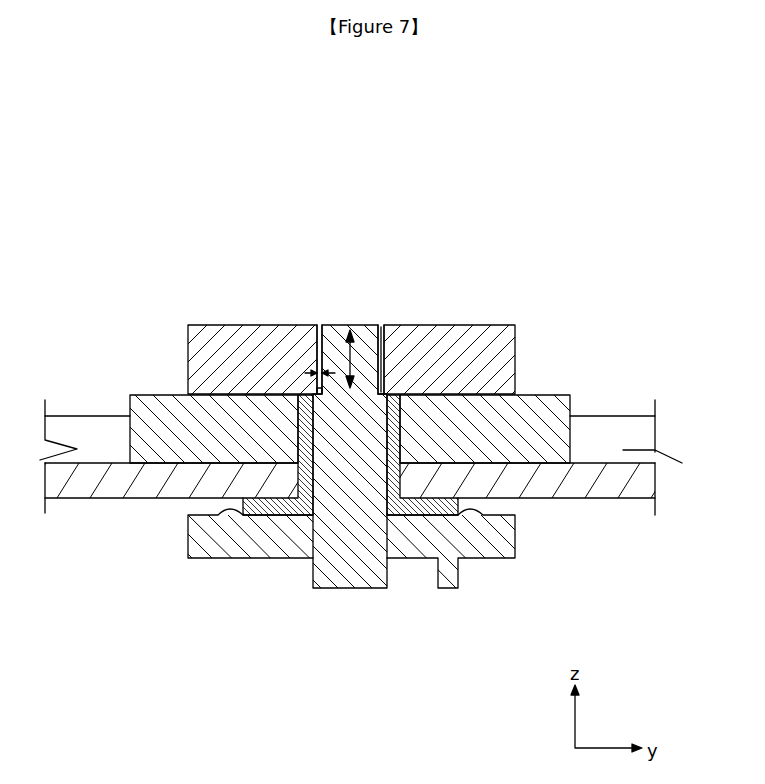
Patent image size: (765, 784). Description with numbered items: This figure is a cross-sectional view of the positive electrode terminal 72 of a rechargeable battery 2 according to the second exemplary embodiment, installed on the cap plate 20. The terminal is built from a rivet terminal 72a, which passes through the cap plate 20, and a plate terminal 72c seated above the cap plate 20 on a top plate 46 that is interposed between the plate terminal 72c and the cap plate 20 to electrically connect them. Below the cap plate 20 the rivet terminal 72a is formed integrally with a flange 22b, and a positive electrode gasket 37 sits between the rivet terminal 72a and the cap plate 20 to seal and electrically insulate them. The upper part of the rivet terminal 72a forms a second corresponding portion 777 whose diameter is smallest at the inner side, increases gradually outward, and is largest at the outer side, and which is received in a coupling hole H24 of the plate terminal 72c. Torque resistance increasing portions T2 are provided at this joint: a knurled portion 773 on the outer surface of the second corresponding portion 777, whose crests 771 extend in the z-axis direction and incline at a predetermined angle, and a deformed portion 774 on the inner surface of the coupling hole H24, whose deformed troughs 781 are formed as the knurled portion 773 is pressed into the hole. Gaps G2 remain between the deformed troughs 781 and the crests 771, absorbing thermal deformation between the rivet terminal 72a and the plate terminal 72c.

The rechargeable battery 2 is at (360, 134).
The positive electrode terminal 72 is at (366, 446).
The rivet terminal 72a is at (337, 598).
The plate terminal 72c is at (200, 334).
The crests 771 is at (317, 366).
The deformed troughs 781 is at (318, 373).
The gaps G2 is at (312, 396).
The coupling hole H24 is at (350, 330).
The second corresponding portion 777 is at (378, 394).
The knurled portion 773 is at (383, 345).
The deformed portion 774 is at (387, 394).
The torque resistance increasing portions T2 is at (453, 295).
The top plate 46 is at (135, 410).
The cap plate 20 is at (635, 485).
The positive electrode gasket 37 is at (258, 516).
The flange 22b is at (505, 553).